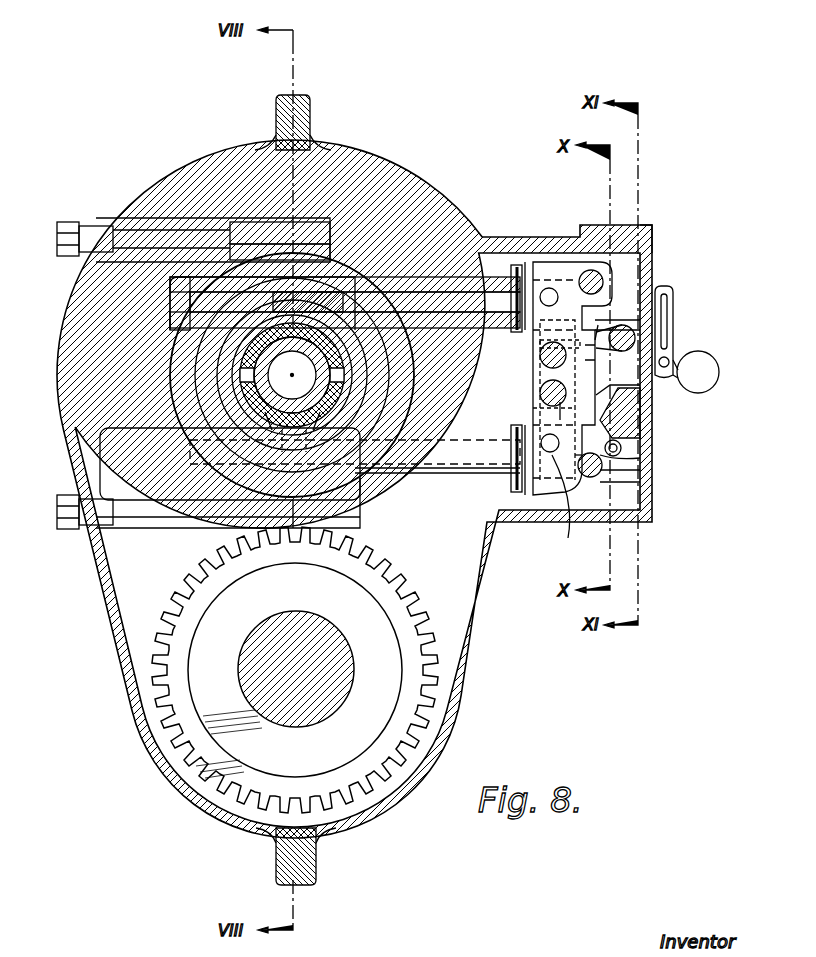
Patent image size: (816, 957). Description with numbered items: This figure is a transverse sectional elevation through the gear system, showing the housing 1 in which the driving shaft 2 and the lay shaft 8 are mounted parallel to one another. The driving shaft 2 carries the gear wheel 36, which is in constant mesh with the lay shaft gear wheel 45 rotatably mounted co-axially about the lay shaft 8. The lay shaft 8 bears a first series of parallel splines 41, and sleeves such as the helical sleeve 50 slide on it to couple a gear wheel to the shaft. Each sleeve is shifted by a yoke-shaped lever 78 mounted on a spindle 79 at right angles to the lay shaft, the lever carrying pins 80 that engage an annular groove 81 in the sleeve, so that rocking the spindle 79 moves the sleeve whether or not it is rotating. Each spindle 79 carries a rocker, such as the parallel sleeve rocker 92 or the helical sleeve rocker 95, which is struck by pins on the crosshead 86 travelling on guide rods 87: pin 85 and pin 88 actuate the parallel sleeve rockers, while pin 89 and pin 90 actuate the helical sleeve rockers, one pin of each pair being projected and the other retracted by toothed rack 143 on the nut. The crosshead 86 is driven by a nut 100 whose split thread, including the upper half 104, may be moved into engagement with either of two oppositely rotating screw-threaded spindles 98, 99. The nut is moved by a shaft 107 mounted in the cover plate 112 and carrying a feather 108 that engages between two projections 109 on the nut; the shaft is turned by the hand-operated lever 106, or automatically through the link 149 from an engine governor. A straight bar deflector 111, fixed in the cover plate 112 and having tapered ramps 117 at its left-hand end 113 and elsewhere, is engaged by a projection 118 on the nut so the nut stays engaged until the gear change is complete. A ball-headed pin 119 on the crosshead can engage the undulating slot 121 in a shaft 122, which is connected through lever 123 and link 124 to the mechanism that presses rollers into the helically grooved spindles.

The housing 1 is at (70, 356).
The driving shaft 2 is at (320, 668).
The lay shaft 8 is at (330, 390).
The gear wheel 36 is at (400, 740).
The parallel splines 41 is at (310, 400).
The lay shaft gear wheel 45 is at (355, 548).
The helical sleeve 50 is at (293, 420).
The lever 78 is at (225, 340).
The spindle 79 is at (410, 298).
The pins 80 is at (245, 370).
The annular groove 81 is at (265, 412).
The pin 85 is at (526, 265).
The crosshead 86 is at (540, 355).
The guide rods 87 is at (603, 278).
The pin 88 is at (538, 344).
The pin 89 is at (535, 420).
The pin 90 is at (530, 495).
The rocker 92 is at (510, 278).
The rocker 95 is at (512, 470).
The screw-threaded spindle 98 is at (540, 393).
The screw-threaded spindle 99 is at (560, 400).
The nut 100 is at (673, 290).
The upper half of thread 104 is at (549, 297).
The lever 106 is at (690, 392).
The shaft 107 is at (636, 340).
The feather 108 is at (600, 323).
The projections 109 is at (618, 317).
The deflector 111 is at (640, 400).
The cover plate 112 is at (652, 228).
The left-hand end 113 is at (640, 420).
The tapered ramps 117 is at (568, 442).
The projection 118 is at (588, 345).
The ball-headed pin 119 is at (580, 458).
The undulating slot 121 is at (622, 448).
The shaft 122 is at (640, 456).
The lever 123 is at (642, 470).
The link 124 is at (640, 484).
The toothed rack 143 is at (569, 507).
The link 149 is at (673, 305).